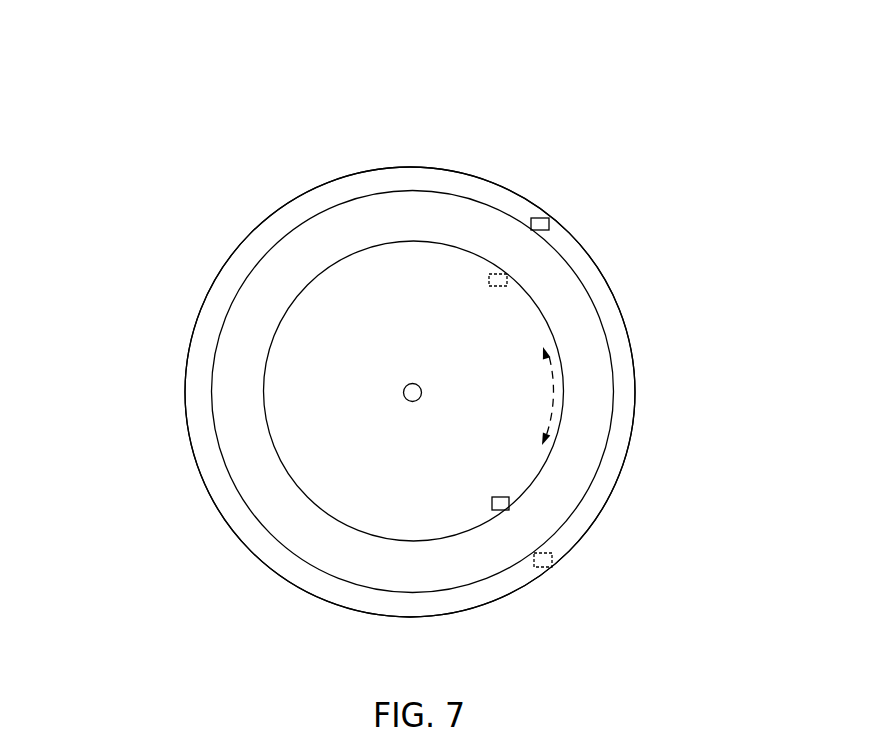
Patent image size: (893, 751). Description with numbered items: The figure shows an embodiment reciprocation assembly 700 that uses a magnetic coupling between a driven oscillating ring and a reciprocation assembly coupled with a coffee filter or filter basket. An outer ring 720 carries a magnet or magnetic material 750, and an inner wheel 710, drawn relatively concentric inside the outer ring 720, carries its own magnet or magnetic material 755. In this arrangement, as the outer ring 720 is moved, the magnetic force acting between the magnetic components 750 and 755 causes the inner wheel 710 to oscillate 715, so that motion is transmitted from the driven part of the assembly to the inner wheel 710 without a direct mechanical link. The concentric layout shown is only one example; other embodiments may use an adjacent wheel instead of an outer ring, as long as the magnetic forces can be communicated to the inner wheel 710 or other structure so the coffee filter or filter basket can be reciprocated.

The reciprocation assembly 700 is at (166, 227).
The inner wheel 710 is at (274, 452).
The oscillation of inner wheel 715 is at (553, 407).
The outer ring 720 is at (607, 285).
The magnet or magnetic material 750 is at (549, 224).
The magnet or magnetic material 755 is at (495, 274).